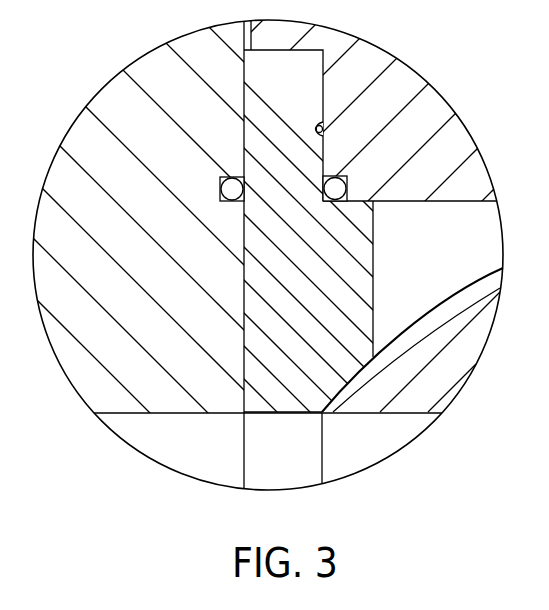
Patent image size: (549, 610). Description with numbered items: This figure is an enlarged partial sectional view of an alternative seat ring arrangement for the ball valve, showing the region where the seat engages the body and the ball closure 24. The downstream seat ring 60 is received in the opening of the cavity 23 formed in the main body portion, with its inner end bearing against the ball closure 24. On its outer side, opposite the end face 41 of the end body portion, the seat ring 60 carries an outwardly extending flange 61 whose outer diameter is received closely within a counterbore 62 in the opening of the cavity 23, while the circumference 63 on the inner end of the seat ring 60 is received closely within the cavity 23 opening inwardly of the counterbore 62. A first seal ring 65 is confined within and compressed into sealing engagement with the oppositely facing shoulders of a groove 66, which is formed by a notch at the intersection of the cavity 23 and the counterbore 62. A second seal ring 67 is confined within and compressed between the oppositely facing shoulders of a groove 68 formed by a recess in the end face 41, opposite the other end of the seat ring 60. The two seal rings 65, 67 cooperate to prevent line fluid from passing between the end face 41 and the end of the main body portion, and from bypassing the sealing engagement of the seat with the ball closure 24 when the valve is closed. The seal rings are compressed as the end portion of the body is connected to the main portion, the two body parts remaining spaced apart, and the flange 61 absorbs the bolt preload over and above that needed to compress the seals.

The cavity 23 is at (424, 204).
The ball closure 24 is at (438, 304).
The end face 41 is at (250, 320).
The downstream seat ring 60 is at (243, 249).
The outwardly extending flange 61 is at (323, 93).
The counterbore 62 is at (329, 130).
The circumference 63 is at (362, 201).
The first seal ring 65 is at (320, 200).
The groove 66 is at (338, 176).
The second seal ring 67 is at (222, 180).
The groove 68 is at (221, 195).